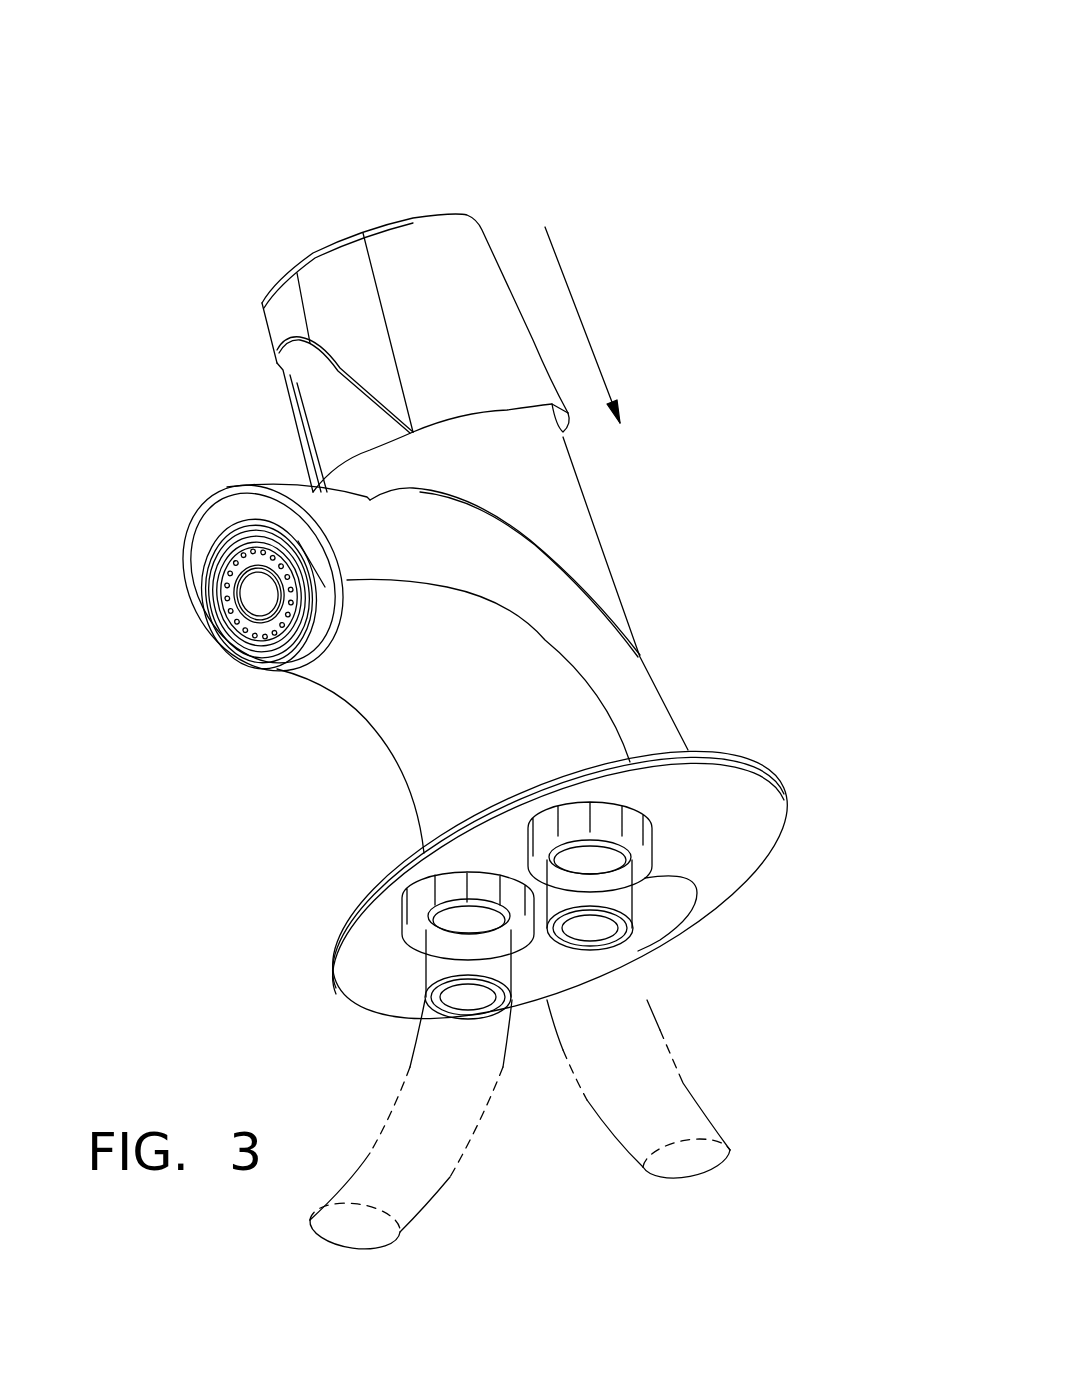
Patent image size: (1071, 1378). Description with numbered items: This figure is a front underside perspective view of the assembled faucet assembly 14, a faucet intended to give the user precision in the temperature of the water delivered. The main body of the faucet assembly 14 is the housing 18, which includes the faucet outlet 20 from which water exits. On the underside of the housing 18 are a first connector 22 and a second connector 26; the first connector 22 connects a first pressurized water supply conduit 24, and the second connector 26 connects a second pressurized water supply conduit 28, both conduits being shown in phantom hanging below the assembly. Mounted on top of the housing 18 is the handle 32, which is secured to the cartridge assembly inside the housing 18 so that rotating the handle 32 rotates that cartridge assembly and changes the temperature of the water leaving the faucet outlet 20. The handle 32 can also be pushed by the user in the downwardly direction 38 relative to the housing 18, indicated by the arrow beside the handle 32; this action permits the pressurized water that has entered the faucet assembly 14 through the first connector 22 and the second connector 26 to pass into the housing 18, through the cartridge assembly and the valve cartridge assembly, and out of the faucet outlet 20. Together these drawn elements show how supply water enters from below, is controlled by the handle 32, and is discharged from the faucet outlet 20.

The faucet assembly 14 is at (617, 117).
The housing 18 is at (563, 663).
The faucet outlet 20 is at (230, 618).
The first connector 22 is at (600, 873).
The first pressurized water supply conduit 24 is at (665, 1043).
The second connector 26 is at (438, 962).
The second pressurized water supply conduit 28 is at (450, 1177).
The handle 32 is at (435, 250).
The downwardly direction 38 is at (577, 313).